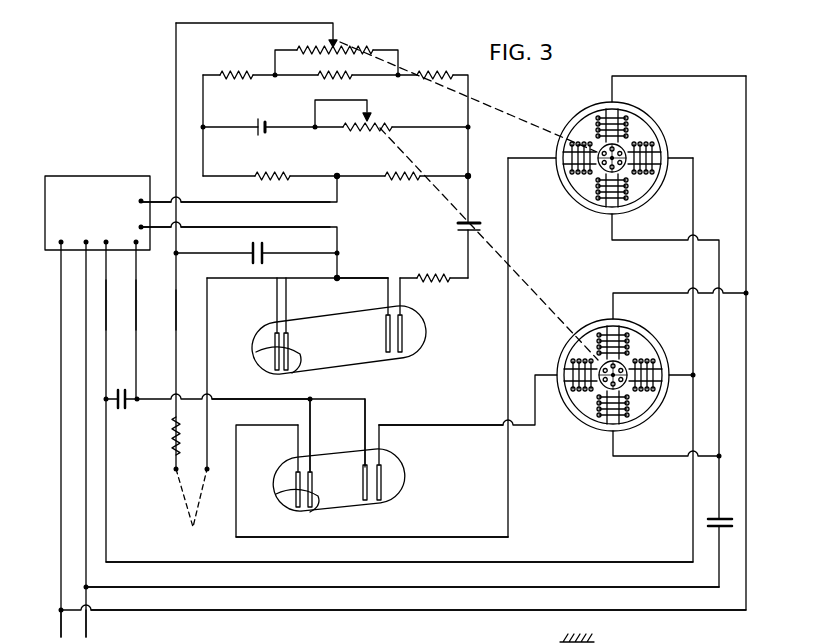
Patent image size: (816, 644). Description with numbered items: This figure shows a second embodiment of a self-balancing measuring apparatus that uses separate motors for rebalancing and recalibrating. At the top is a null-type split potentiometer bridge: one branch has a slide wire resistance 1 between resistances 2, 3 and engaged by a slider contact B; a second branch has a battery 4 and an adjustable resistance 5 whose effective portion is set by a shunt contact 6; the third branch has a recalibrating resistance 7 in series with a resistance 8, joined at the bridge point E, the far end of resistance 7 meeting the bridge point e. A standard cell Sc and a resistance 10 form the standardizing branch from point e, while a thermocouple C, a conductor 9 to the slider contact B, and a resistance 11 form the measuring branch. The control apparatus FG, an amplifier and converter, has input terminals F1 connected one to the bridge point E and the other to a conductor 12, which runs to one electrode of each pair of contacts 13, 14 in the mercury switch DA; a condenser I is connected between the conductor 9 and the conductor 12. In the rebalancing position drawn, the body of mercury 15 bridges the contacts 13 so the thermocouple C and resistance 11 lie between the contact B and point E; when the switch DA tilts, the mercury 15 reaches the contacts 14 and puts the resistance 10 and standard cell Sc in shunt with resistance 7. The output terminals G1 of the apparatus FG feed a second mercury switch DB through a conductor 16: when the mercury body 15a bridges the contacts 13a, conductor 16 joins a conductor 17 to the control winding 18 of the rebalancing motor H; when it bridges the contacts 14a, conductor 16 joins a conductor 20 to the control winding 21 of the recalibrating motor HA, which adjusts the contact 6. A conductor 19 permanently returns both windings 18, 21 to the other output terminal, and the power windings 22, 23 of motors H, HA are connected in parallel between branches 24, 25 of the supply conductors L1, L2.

The control apparatus FG is at (88, 176).
The slider contact B is at (335, 44).
The slide wire resistance 1 is at (358, 50).
The resistance 2 is at (238, 72).
The resistance 3 is at (435, 72).
The battery 4 is at (267, 122).
The adjustable resistance 5 is at (385, 124).
The contact 6 is at (368, 118).
The recalibrating resistance 7 is at (396, 174).
The resistance 8 is at (285, 174).
The bridge point E is at (338, 175).
The bridge circuit point e is at (470, 176).
The input terminals F1 is at (338, 229).
The standard cell Sc is at (458, 228).
The condenser I is at (264, 250).
The conductor 9 is at (178, 320).
The output terminals G1 is at (134, 320).
The resistance 10 is at (430, 278).
The conductor 12 is at (355, 278).
The mercury switch DA is at (426, 328).
The contacts 13 is at (288, 345).
The contacts 14 is at (386, 328).
The body of mercury 15 is at (298, 360).
The resistance 11 is at (174, 432).
The thermocouple C is at (188, 506).
The conductor 16 is at (249, 399).
The switch DB is at (406, 479).
The contacts 13a is at (305, 481).
The contacts 14a is at (363, 489).
The mercury body 15a is at (313, 508).
The conductor 17 is at (406, 537).
The conductor 20 is at (436, 425).
The rebalancing motor H is at (652, 126).
The control winding 18 is at (592, 176).
The power winding 22 is at (632, 175).
The recalibrating motor HA is at (653, 340).
The control winding 21 is at (593, 393).
The power winding 23 is at (633, 392).
The conductor 19 is at (595, 562).
The supply branch 24 is at (600, 587).
The supply branch 25 is at (603, 610).
The supply conductor L1 is at (61, 626).
The supply conductor L2 is at (86, 633).